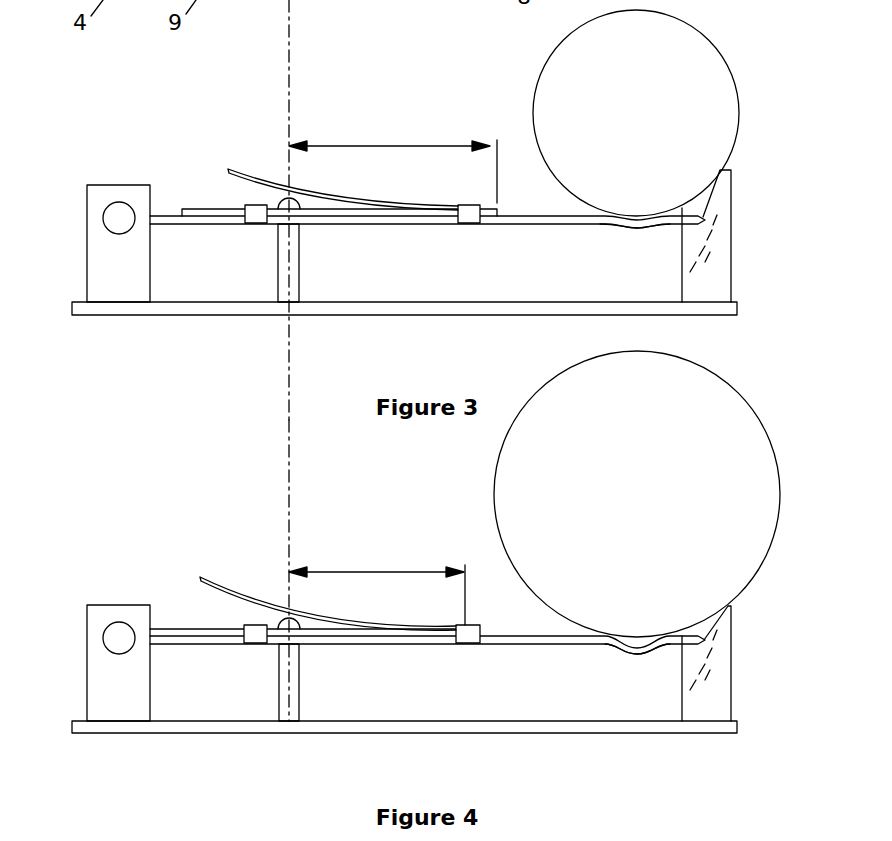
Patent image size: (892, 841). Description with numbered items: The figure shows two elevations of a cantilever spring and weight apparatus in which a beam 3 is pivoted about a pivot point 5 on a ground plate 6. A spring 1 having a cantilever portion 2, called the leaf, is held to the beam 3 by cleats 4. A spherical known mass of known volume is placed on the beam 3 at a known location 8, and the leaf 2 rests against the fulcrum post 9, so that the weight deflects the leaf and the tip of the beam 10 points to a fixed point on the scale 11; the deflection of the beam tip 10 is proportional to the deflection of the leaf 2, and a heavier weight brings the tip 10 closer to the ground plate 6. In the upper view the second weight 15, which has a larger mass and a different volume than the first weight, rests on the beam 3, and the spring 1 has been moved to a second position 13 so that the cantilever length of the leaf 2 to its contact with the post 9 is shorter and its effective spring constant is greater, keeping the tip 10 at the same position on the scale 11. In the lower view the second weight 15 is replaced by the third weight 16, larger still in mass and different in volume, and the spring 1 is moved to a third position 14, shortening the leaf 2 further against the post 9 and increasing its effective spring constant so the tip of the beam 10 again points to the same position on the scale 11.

In FIG. 3, the spring 1 is at (443, 207).
In FIG. 4, the spring 1 is at (436, 632).
In FIG. 3, the cantilever portion 2 is at (320, 198).
In FIG. 4, the cantilever portion 2 is at (320, 620).
In FIG. 3, the beam 3 is at (560, 222).
In FIG. 4, the beam 3 is at (560, 641).
In FIG. 3, the cleats 4 is at (250, 221).
In FIG. 4, the cleats 4 is at (250, 641).
In FIG. 3, the pivot point 5 is at (117, 218).
In FIG. 4, the pivot point 5 is at (117, 640).
In FIG. 3, the ground plate 6 is at (128, 312).
In FIG. 4, the ground plate 6 is at (128, 732).
In FIG. 3, the known location 8 is at (632, 223).
In FIG. 4, the known location 8 is at (634, 650).
In FIG. 3, the post 9 is at (283, 270).
In FIG. 4, the post 9 is at (283, 690).
In FIG. 3, the tip of the beam 10 is at (703, 217).
In FIG. 4, the tip of the beam 10 is at (707, 632).
In FIG. 3, the scale 11 is at (720, 230).
In FIG. 4, the scale 11 is at (719, 647).
In FIG. 3, the second position 13 is at (287, 193).
In FIG. 4, the third position 14 is at (290, 614).
In FIG. 3, the second weight 15 is at (687, 77).
In FIG. 4, the third weight 16 is at (715, 461).